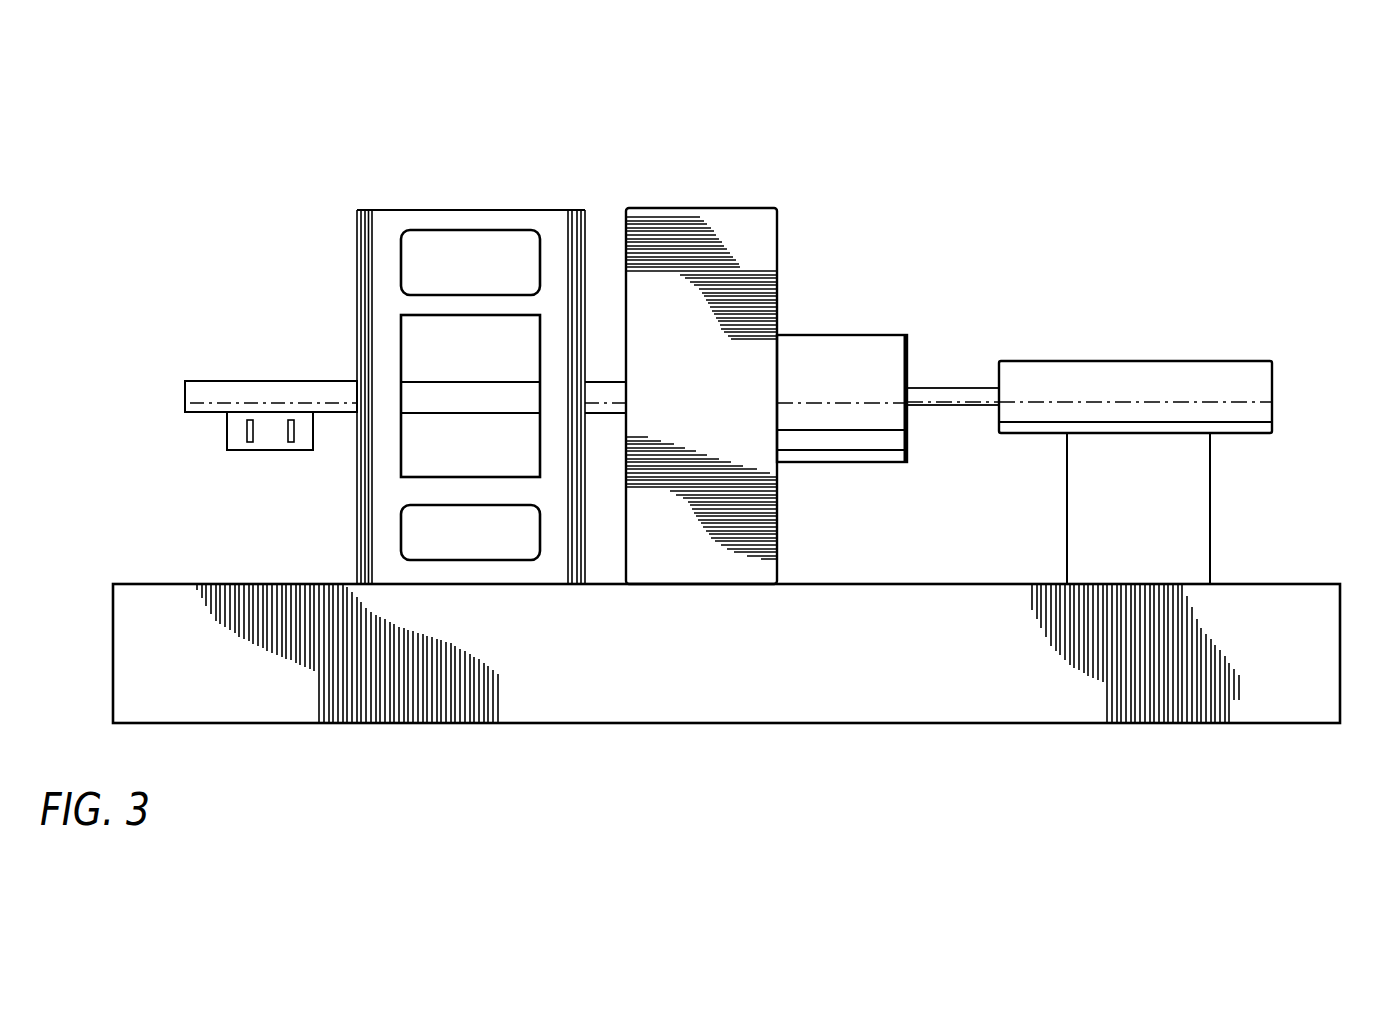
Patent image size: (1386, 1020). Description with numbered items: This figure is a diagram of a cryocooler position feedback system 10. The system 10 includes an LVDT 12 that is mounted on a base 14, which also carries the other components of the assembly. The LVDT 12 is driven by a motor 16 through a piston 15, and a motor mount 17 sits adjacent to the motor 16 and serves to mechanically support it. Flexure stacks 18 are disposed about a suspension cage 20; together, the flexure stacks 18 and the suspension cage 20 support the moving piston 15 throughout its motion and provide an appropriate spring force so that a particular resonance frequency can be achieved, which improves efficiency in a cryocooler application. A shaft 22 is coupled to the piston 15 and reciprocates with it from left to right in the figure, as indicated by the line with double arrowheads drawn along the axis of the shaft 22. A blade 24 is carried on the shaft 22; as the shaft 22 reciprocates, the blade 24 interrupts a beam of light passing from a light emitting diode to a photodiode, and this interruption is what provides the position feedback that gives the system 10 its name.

The cryocooler position feedback system 10 is at (1164, 148).
The LVDT 12 is at (1262, 341).
The base 14 is at (1294, 584).
The piston 15 is at (950, 407).
The motor 16 is at (886, 313).
The motor mount 17 is at (760, 208).
The flexure stacks 18 is at (368, 205).
The suspension cage 20 is at (500, 158).
The shaft 22 is at (185, 399).
The blade 24 is at (256, 451).